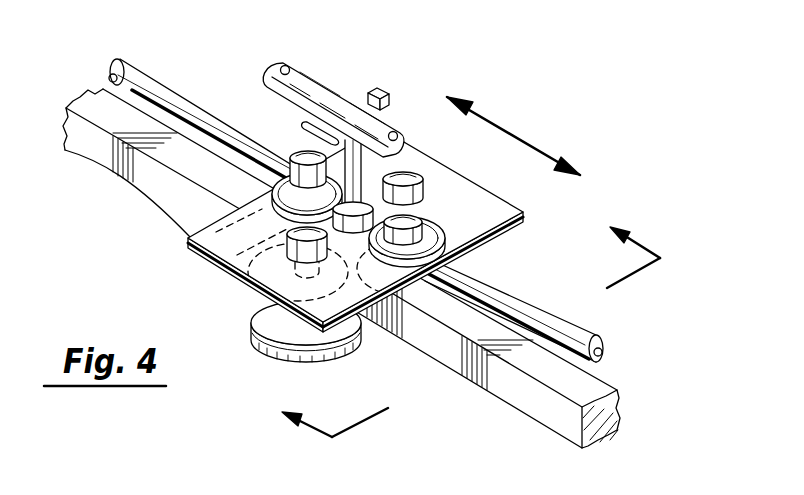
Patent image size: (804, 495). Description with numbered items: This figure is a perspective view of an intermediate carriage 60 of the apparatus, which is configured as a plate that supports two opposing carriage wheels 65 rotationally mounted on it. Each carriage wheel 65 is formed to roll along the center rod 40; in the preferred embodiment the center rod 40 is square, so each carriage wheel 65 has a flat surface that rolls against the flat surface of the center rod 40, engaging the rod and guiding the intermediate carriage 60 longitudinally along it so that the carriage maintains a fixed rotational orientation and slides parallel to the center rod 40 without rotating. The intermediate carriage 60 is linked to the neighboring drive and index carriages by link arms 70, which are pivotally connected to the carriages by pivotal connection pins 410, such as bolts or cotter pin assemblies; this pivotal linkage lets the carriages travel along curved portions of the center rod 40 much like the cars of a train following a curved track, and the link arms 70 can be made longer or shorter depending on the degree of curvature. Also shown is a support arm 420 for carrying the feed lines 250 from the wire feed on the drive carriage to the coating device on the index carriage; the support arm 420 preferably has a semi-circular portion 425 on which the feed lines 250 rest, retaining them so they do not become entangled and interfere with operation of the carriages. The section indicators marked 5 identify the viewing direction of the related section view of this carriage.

The center rod 40 is at (593, 391).
The intermediate carriage 60 is at (225, 248).
The carriage wheel 65 is at (280, 328).
The link arm 70 is at (165, 97).
The feed lines 250 is at (312, 98).
The pivotal connection pin 410 is at (432, 218).
The support arm 420 is at (393, 165).
The semi-circular portion 425 is at (383, 93).
The section line 5- 5 is at (483, 348).